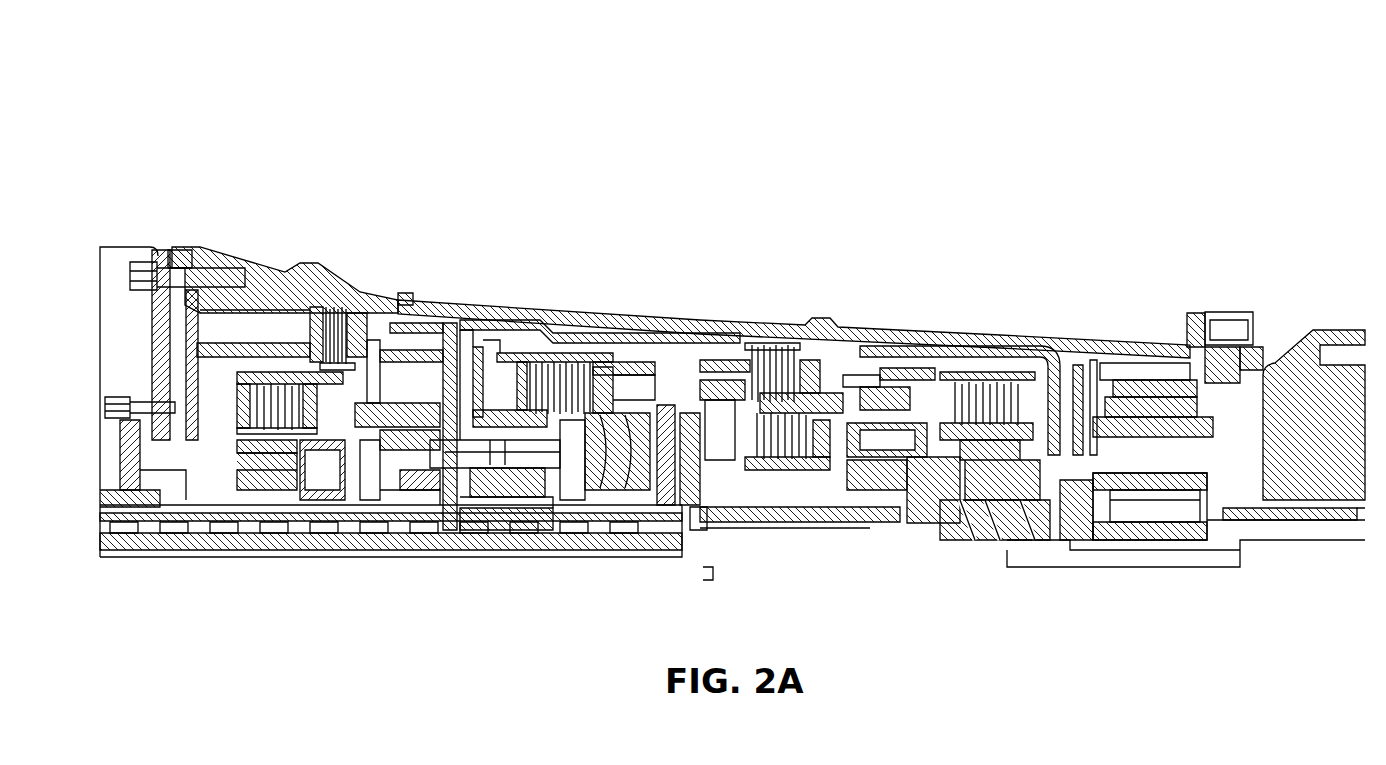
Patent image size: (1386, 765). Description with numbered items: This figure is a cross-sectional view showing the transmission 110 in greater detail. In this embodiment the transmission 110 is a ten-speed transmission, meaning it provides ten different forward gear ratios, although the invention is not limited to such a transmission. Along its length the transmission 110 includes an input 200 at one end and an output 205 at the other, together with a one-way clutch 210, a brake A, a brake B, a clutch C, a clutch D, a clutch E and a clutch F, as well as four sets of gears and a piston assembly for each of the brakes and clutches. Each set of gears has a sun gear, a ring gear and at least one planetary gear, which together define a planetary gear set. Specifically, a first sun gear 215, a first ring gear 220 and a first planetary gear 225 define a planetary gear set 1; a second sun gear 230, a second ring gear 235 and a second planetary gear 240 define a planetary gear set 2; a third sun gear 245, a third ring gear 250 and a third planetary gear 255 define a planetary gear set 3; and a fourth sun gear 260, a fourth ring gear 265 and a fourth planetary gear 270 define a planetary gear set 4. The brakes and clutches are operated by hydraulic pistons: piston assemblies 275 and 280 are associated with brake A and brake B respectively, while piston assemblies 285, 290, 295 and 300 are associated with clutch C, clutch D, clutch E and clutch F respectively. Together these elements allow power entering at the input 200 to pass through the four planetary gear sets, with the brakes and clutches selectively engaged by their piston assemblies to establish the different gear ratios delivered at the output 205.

The transmission 110 is at (1065, 115).
The input 200 is at (313, 555).
The output 205 is at (1265, 535).
The one-way clutch 210 is at (222, 450).
The first sun gear 215 is at (420, 527).
The first ring gear 220 is at (413, 373).
The first planetary gear 225 is at (375, 500).
The second sun gear 230 is at (520, 515).
The second ring gear 235 is at (490, 430).
The second planetary gear 240 is at (500, 497).
The third sun gear 245 is at (900, 525).
The third ring gear 250 is at (895, 395).
The third planetary gear 255 is at (918, 360).
The fourth sun gear 260 is at (1155, 507).
The fourth ring gear 265 is at (1140, 385).
The fourth planetary gear 270 is at (1160, 450).
The piston assembly 275 is at (218, 320).
The piston assembly 280 is at (242, 310).
The piston assembly 285 is at (610, 373).
The piston assembly 290 is at (703, 460).
The piston assembly 295 is at (1030, 390).
The piston assembly 300 is at (748, 340).
The brake A is at (300, 330).
The brake B is at (225, 420).
The clutch C is at (503, 387).
The clutch D is at (752, 453).
The clutch E is at (945, 380).
The clutch F is at (835, 377).
The planetary gear set 1 is at (343, 425).
The planetary gear set 2 is at (580, 462).
The planetary gear set 3 is at (950, 470).
The planetary gear set 4 is at (1225, 453).